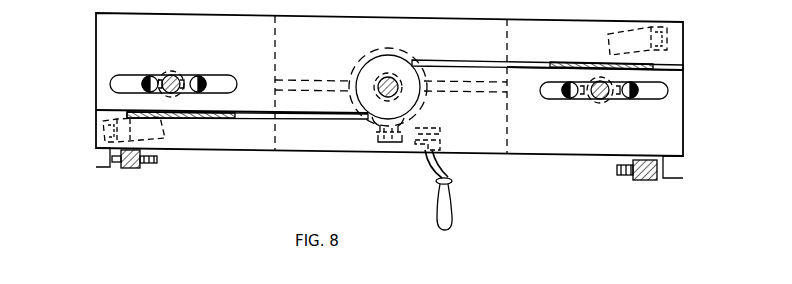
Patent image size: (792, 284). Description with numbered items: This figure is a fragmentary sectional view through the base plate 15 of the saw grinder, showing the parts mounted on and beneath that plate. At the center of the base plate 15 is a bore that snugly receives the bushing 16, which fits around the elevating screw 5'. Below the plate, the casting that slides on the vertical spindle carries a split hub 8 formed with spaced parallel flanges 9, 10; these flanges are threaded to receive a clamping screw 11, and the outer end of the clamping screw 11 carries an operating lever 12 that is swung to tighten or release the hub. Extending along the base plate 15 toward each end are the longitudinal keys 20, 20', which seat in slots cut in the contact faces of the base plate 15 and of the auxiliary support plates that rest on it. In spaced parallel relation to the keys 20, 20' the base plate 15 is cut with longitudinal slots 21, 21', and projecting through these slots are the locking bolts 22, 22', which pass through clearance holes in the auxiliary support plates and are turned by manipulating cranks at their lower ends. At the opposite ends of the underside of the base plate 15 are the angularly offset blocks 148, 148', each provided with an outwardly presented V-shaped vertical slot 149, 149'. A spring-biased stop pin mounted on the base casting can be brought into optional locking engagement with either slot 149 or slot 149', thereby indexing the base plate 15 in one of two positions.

The hub 5' is at (416, 87).
The split hub 8 is at (377, 121).
The flange 9 is at (384, 142).
The flange 10 is at (392, 143).
The clamping screw 11 is at (414, 139).
The operating lever 12 is at (455, 205).
The base plate 15 is at (520, 157).
The bushing 16 is at (386, 78).
The longitudinal key 20 is at (547, 50).
The longitudinal key 20' is at (247, 143).
The longitudinal slot 21 is at (579, 104).
The longitudinal slot 21' is at (189, 61).
The bolt 22 is at (604, 103).
The bolt 22' is at (173, 65).
The angularly offset block 148 is at (670, 32).
The angularly offset block 148' is at (159, 151).
The V-shaped vertical slot 149 is at (693, 42).
The V-shaped vertical slot 149' is at (72, 134).